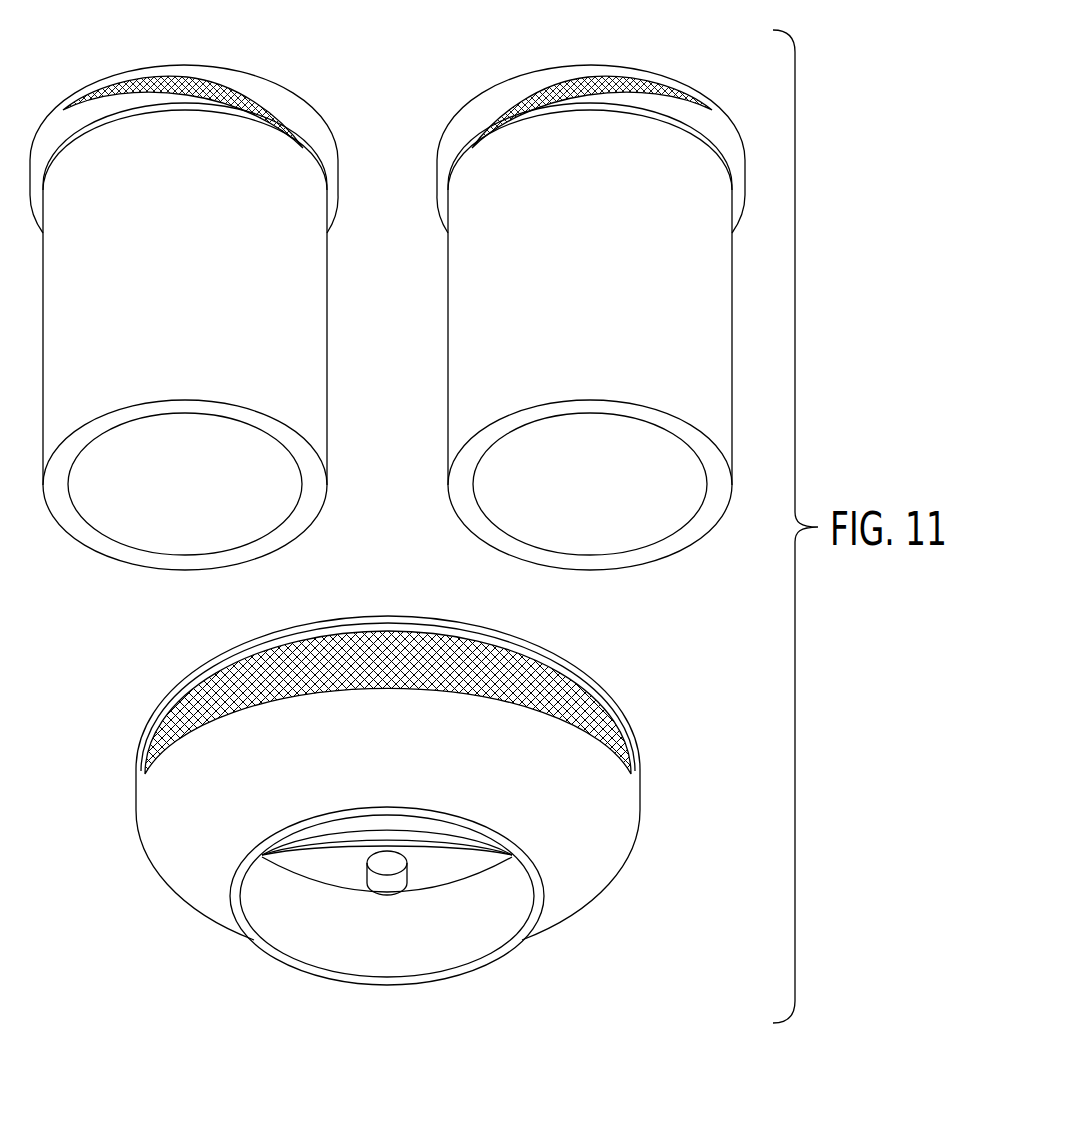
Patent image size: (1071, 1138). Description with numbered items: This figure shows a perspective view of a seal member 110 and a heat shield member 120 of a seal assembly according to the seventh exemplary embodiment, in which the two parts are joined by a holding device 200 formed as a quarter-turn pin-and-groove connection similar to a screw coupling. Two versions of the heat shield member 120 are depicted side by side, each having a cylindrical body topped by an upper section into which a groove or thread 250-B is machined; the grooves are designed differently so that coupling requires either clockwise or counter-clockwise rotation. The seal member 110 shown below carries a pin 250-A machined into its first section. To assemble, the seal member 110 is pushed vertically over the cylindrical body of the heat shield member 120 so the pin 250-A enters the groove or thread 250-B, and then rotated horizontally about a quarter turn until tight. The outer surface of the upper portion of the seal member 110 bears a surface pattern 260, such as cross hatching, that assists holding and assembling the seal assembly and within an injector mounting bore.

The seal member 110 is at (377, 830).
The heat shield member 120 is at (387, 294).
The holding device 200 is at (387, 125).
The pin 250-A is at (388, 870).
The groove or thread 250-B is at (183, 88).
The surface pattern 260 is at (232, 692).